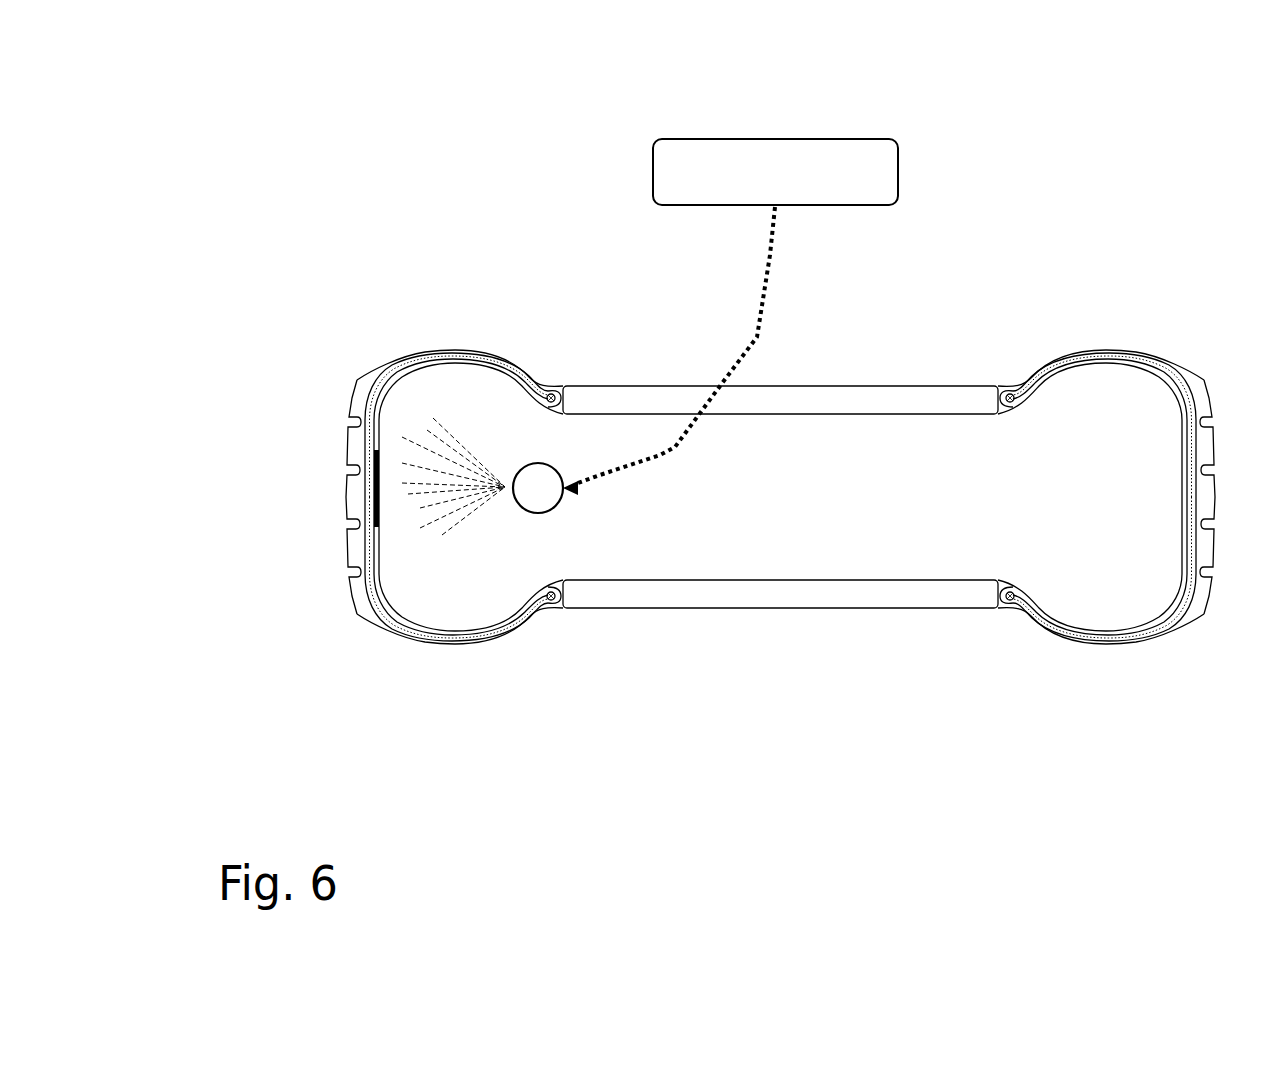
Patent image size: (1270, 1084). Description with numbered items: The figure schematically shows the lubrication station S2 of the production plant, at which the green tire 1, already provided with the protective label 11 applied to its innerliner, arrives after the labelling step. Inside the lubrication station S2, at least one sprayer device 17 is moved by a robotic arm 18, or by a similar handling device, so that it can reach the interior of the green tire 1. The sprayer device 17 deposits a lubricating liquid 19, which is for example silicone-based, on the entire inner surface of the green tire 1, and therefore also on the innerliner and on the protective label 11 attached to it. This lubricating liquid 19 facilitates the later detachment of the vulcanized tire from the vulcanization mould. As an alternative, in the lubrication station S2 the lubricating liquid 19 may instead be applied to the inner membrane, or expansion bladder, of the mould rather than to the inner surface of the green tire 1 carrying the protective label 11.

The green tire 1 is at (835, 656).
The protective label 11 is at (377, 464).
The sprayer device 17 is at (538, 488).
The robotic arm 18 is at (827, 271).
The lubricating liquid 19 is at (440, 492).
The lubrication station S2 is at (307, 142).